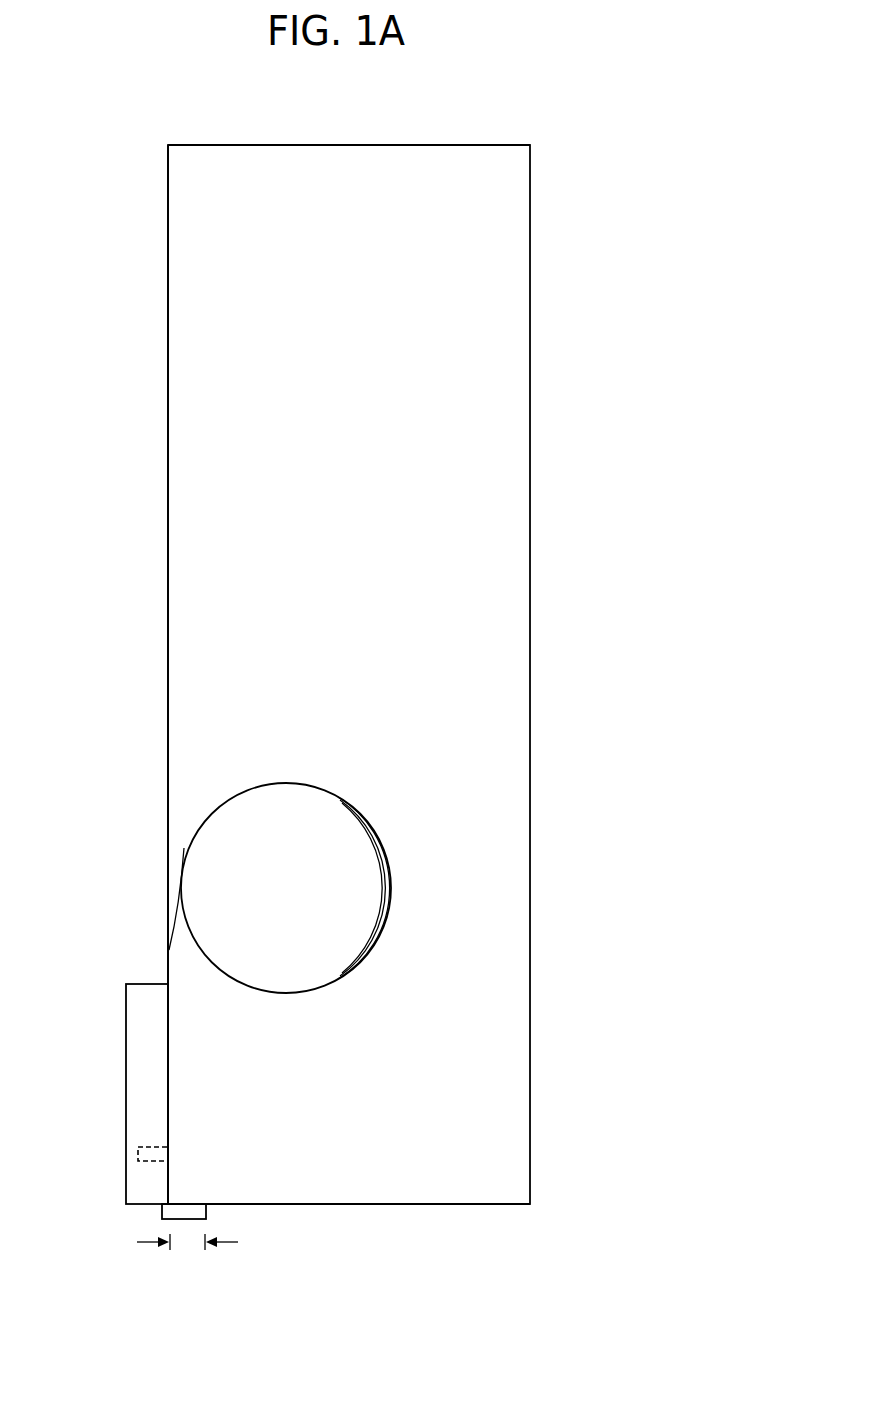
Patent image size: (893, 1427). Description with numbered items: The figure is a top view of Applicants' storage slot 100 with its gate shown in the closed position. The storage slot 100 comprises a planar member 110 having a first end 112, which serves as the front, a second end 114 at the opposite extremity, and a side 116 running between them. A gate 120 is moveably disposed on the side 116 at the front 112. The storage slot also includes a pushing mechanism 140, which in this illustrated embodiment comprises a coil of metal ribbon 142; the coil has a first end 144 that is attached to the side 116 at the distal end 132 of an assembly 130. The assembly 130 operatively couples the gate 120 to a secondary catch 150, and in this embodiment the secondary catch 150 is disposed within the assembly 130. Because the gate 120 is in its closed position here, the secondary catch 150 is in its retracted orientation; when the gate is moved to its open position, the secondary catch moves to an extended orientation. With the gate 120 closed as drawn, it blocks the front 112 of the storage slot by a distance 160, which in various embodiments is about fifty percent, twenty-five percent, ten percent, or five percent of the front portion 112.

The storage slot 100 is at (328, 1280).
The planar member 110 is at (366, 444).
The first end 112 is at (490, 1205).
The second end 114 is at (469, 145).
The side 116 is at (170, 555).
The gate 120 is at (195, 1210).
The assembly 130 is at (120, 1132).
The distal end 132 is at (126, 1023).
The pushing mechanism 140 is at (335, 781).
The coil of metal ribbon 142 is at (380, 836).
The first end 144 is at (168, 955).
The secondary catch 150 is at (168, 1148).
The distance 160 is at (187, 1247).